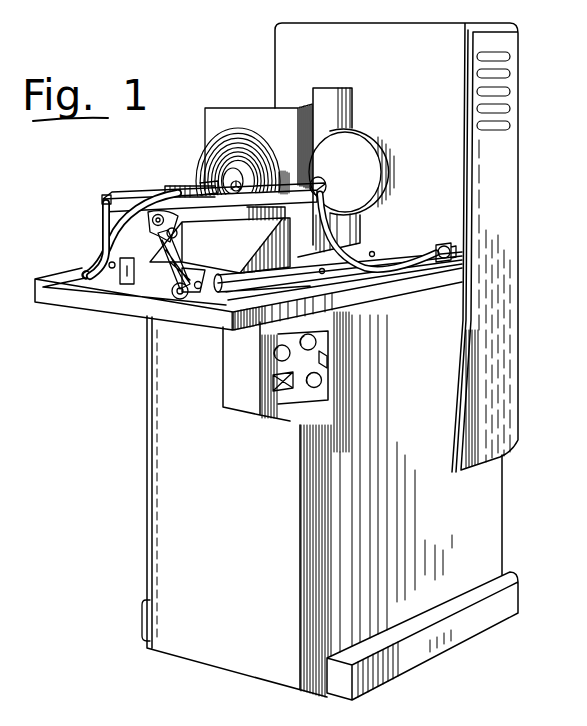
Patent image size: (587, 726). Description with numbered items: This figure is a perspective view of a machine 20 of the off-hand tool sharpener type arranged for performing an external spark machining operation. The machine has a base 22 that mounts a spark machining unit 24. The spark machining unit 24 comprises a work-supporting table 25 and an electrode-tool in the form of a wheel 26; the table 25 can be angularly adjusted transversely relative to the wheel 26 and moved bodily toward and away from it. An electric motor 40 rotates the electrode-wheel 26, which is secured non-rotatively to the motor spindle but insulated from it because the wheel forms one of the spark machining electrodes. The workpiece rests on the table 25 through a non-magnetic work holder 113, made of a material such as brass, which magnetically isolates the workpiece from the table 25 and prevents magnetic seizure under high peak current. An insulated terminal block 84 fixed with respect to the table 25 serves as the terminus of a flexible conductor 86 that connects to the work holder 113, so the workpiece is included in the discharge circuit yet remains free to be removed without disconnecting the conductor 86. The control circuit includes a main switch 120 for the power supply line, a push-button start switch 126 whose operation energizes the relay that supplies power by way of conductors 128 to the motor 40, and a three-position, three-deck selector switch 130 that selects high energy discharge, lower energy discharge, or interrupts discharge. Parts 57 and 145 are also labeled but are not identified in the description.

The machine 20 is at (90, 313).
The base 22 is at (158, 450).
The spark machining unit 24 is at (163, 170).
The work-supporting table 25 is at (143, 195).
The electrode-wheel 26 is at (200, 157).
The electric motor 40 is at (370, 141).
The wheel guard housing 57 is at (240, 113).
The insulated terminal block 84 is at (106, 194).
The flexible conductor 86 is at (102, 232).
The non-magnetic work holder 113 is at (200, 183).
The main switch 120 is at (328, 362).
The start switch 126 is at (276, 355).
The conductors 128 is at (432, 256).
The three-position selector switch 130 is at (283, 392).
The control knob 145 is at (316, 389).